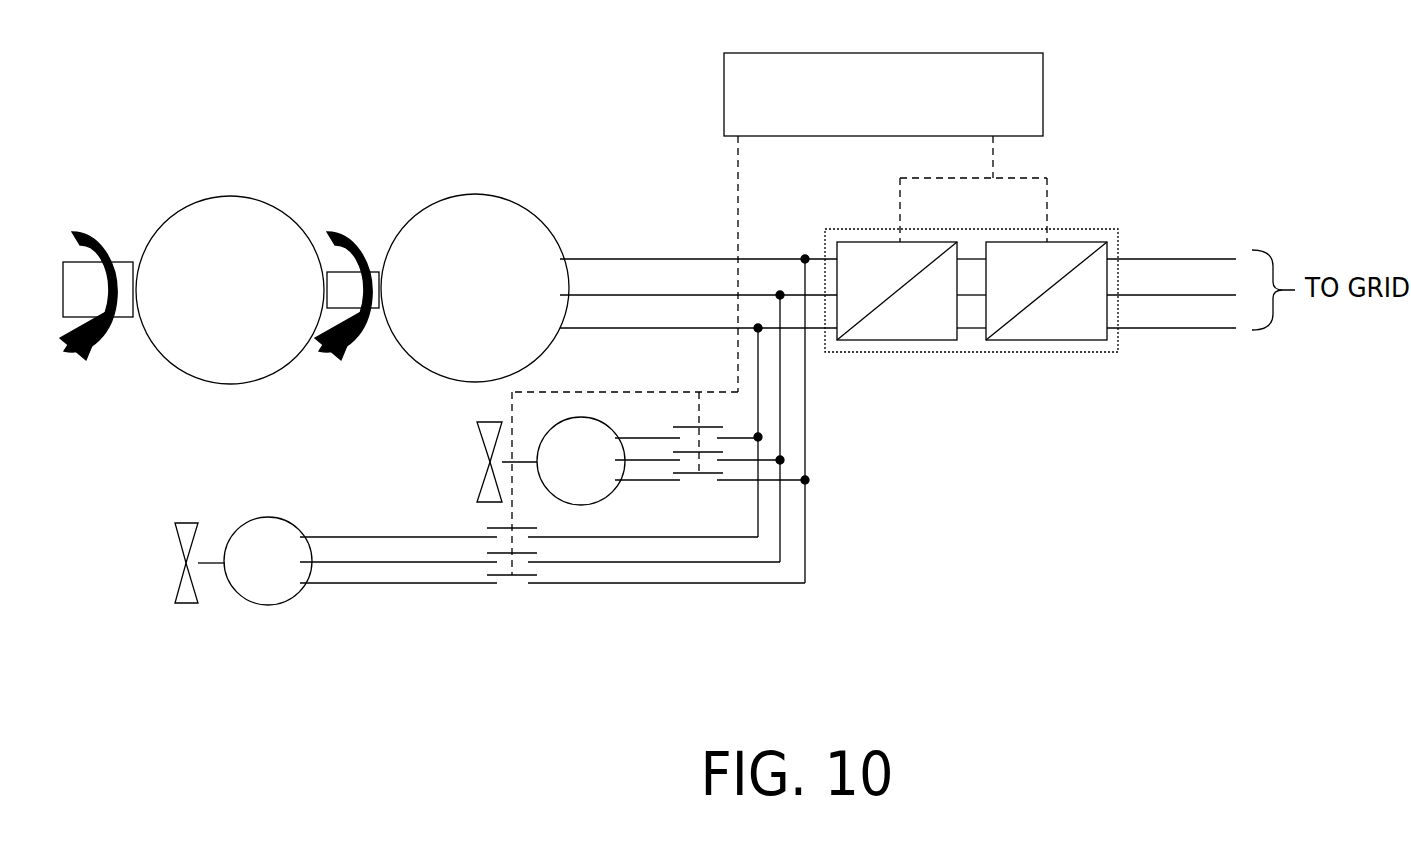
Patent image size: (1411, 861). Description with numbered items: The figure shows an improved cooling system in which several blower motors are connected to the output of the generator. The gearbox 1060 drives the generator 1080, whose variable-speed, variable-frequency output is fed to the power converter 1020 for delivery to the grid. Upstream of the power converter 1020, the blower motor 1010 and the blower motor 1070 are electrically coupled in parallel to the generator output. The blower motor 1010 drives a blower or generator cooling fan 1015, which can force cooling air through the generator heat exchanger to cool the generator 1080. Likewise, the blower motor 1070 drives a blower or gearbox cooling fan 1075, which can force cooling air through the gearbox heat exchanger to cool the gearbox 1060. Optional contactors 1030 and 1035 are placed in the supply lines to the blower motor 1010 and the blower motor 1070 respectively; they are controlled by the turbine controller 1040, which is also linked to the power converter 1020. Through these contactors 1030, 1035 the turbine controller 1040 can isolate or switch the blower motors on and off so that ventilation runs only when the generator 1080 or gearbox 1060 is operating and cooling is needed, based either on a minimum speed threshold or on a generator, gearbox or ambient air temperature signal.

The gearbox 1060 is at (216, 290).
The generator 1080 is at (448, 288).
The turbine controller 1040 is at (883, 94).
The power converter 1020 is at (1103, 228).
The blower motor 1010 is at (563, 461).
The generator cooling fan 1015 is at (477, 433).
The blower motor 1070 is at (255, 561).
The gearbox cooling fan 1075 is at (185, 603).
The contactor 1030 is at (718, 506).
The contactor 1035 is at (514, 606).